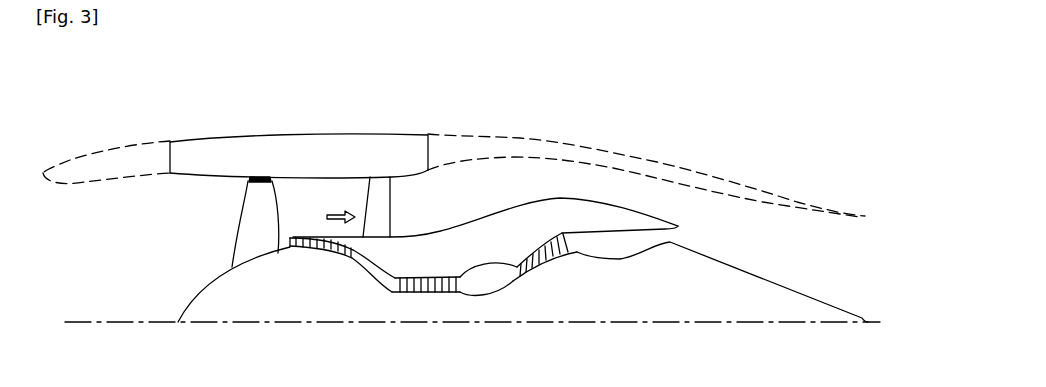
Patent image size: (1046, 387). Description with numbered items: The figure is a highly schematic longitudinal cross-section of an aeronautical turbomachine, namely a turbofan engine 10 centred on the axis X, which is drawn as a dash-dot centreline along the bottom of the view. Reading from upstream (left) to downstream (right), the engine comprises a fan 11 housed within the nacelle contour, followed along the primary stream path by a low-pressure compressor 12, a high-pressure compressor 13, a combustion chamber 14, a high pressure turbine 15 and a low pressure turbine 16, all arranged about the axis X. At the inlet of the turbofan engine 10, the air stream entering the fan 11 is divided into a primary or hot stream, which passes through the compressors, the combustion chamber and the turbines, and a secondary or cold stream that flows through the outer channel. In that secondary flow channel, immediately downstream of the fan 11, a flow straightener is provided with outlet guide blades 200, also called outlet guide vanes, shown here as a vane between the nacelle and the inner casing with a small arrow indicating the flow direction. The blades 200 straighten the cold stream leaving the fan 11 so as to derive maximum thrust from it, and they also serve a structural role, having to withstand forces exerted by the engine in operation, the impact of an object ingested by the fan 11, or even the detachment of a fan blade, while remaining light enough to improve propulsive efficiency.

The turbofan engine 10 is at (686, 135).
The fan 11 is at (262, 175).
The low-pressure compressor 12 is at (318, 267).
The high-pressure compressor 13 is at (425, 294).
The combustion chamber 14 is at (488, 258).
The high pressure turbine 15 is at (527, 282).
The low pressure turbine 16 is at (561, 223).
The outlet guide blades 200 is at (380, 205).
The axis X is at (106, 321).